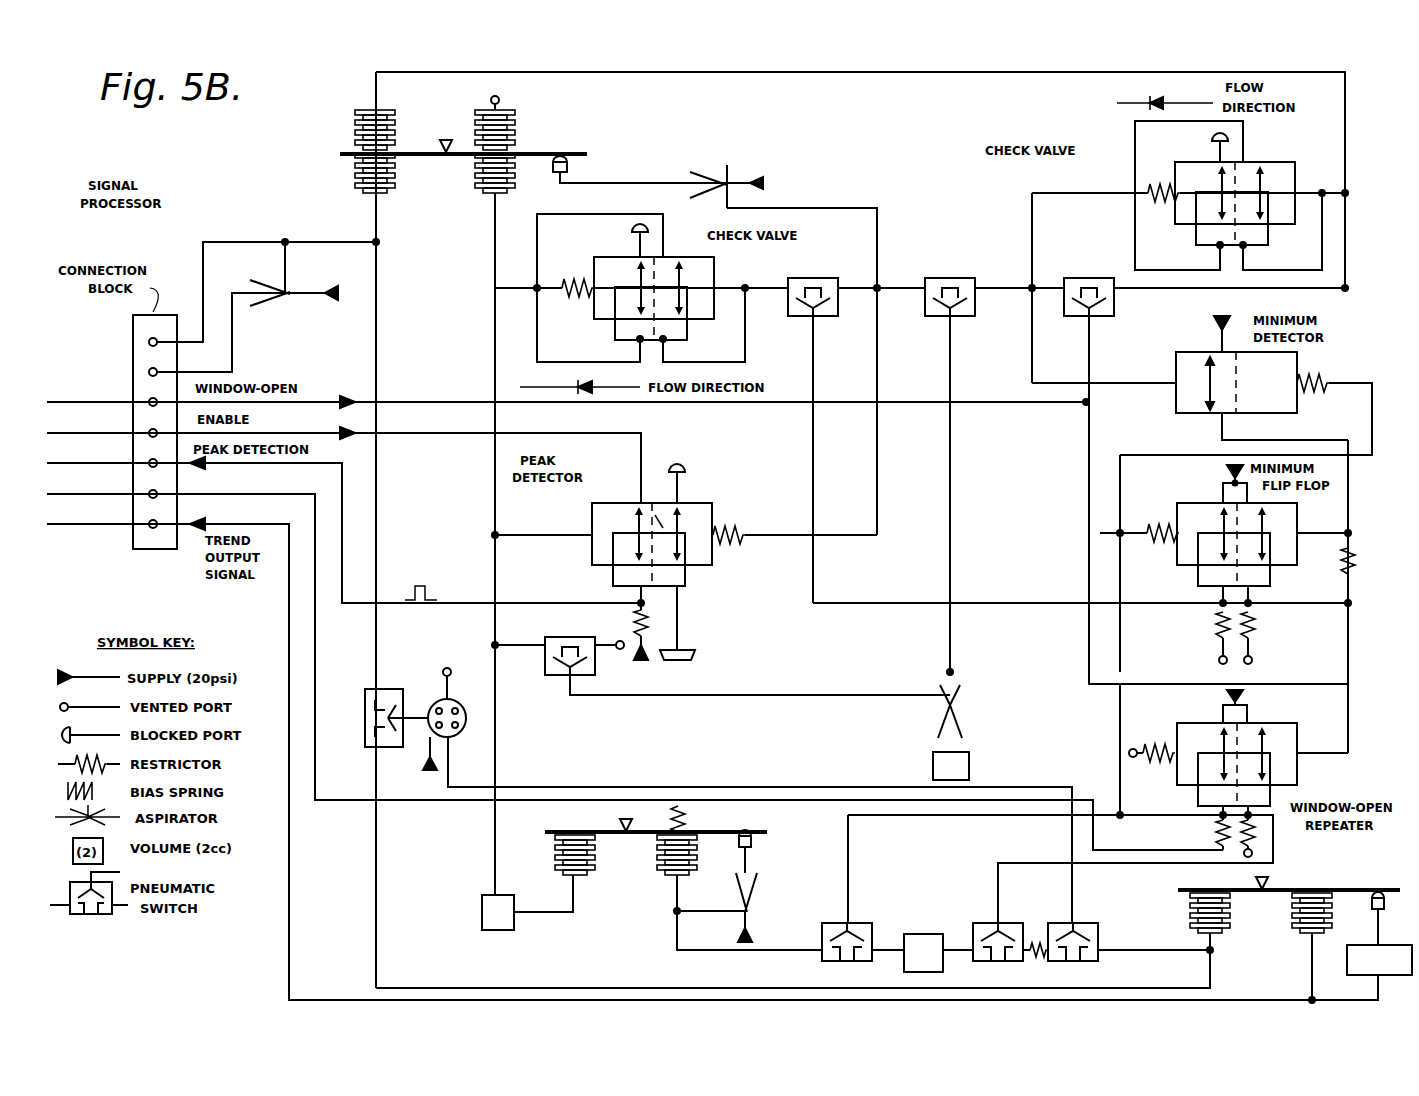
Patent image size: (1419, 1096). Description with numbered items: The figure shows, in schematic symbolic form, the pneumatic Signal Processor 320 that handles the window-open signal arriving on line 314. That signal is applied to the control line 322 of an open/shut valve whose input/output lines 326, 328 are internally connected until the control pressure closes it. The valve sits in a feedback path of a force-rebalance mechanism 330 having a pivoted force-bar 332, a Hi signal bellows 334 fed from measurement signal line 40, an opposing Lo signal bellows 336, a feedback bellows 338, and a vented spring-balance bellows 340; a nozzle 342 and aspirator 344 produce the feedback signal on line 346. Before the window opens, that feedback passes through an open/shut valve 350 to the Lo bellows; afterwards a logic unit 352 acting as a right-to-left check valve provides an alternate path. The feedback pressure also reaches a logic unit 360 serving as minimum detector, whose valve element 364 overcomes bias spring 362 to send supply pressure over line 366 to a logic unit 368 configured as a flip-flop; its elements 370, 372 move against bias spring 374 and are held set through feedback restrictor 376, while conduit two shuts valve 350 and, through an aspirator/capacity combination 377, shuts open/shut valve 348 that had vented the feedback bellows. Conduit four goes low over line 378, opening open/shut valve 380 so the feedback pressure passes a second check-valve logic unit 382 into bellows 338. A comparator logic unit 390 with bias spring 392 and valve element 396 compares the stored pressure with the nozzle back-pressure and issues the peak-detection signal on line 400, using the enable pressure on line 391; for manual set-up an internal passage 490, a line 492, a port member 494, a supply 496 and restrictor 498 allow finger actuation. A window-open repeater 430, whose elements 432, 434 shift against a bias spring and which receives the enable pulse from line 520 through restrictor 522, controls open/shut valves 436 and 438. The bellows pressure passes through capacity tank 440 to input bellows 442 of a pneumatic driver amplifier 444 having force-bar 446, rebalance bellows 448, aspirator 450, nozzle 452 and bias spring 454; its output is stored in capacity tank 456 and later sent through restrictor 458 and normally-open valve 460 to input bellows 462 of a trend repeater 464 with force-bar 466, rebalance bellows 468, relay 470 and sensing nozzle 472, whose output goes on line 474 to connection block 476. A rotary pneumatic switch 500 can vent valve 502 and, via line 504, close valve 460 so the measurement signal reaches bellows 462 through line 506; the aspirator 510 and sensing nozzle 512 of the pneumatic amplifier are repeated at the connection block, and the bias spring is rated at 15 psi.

The signal processor 320 is at (178, 256).
The measurement signal line 40 is at (245, 242).
The connection block 476 is at (130, 527).
The window-open signal line 314 is at (70, 402).
The enable signal line 391 is at (66, 440).
The peak detection signal line 400 is at (68, 470).
The enable pulse line 520 is at (68, 500).
The output line 474 is at (240, 524).
The sensing nozzle 512 is at (290, 280).
The aspirator 510 is at (285, 300).
The line 506 is at (377, 853).
The force-rebalance mechanism 330 is at (672, 133).
The Lo signal bellows 336 is at (390, 115).
The Hi signal bellows 334 is at (395, 188).
The force-bar 332 is at (540, 152).
The vented spring-balance bellows 340 is at (518, 118).
The feedback bellows 338 is at (517, 184).
The nozzle 342 is at (570, 165).
The aspirator 344 is at (727, 170).
The feedback signal line 346 is at (835, 206).
The logic unit (check valve) 382 is at (790, 261).
The open/shut valve 380 is at (810, 275).
The line 378 is at (1010, 600).
The open/shut valve 350 is at (968, 270).
The input/output line 326 is at (1072, 280).
The input/output line 328 is at (1098, 278).
The control line 322 is at (1080, 318).
The logic unit (check valve) 352 is at (1148, 165).
The logic unit (minimum detector) 360 is at (1170, 392).
The valve element 364 is at (1205, 375).
The restrictor 15 is at (1313, 372).
The bias spring 362 is at (1318, 392).
The line 366 is at (1242, 440).
The logic unit (flip-flop) 368 is at (1320, 510).
The valve element 372 is at (1218, 520).
The bias spring 374 is at (1162, 548).
The valve element 370 is at (1268, 545).
The feedback restrictor 376 is at (1365, 568).
The logic unit (peak detector comparator) 390 is at (580, 522).
The internal passage 490 is at (660, 520).
The comparator valve element 396 is at (668, 520).
The bias spring 392 is at (728, 545).
The restrictor 498 is at (650, 632).
The supply 496 is at (638, 660).
The line 492 is at (682, 609).
The port member 494 is at (690, 658).
The open/shut valve 348 is at (560, 637).
The aspirator/capacity combination 377 is at (913, 708).
The open/shut valve 502 is at (388, 690).
The rotary pneumatic switch 500 is at (462, 702).
The line 504 is at (545, 786).
The window-open repeater 430 is at (1335, 703).
The valve element 434 is at (1215, 740).
The valve element 432 is at (1265, 740).
The restrictor 522 is at (1215, 826).
The capacity tank 440 is at (514, 930).
The input bellows 442 is at (555, 858).
The force-bar 446 is at (560, 830).
The pneumatic driver amplifier 444 is at (648, 870).
The rebalance bellows 448 is at (739, 892).
The bias spring 454 is at (685, 810).
The nozzle 452 is at (752, 843).
The aspirator 450 is at (758, 893).
The open/shut valve 436 is at (850, 922).
The capacity tank 456 is at (912, 934).
The open/shut valve 438 is at (985, 922).
The restrictor 458 is at (1038, 940).
The open/shut valve 460 is at (1090, 962).
The input bellows 462 is at (1190, 915).
The force-bar 466 is at (1195, 880).
The trend repeater 464 is at (1275, 908).
The rebalance bellows 468 is at (1325, 925).
The sensing nozzle 472 is at (1385, 900).
The pneumatic relay 470 is at (1383, 974).